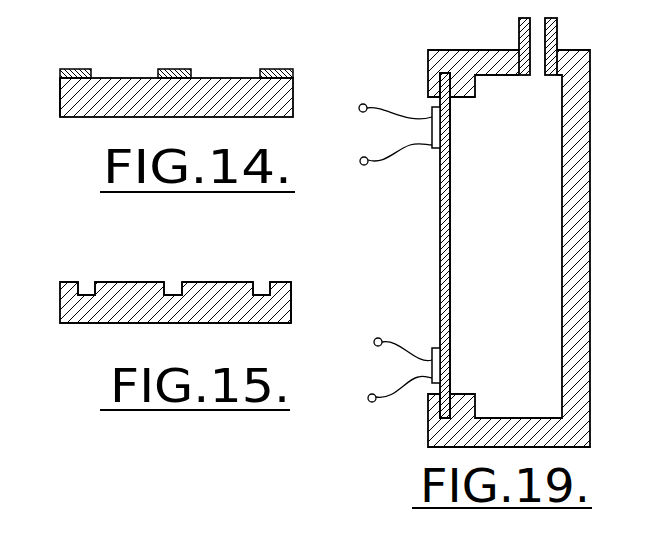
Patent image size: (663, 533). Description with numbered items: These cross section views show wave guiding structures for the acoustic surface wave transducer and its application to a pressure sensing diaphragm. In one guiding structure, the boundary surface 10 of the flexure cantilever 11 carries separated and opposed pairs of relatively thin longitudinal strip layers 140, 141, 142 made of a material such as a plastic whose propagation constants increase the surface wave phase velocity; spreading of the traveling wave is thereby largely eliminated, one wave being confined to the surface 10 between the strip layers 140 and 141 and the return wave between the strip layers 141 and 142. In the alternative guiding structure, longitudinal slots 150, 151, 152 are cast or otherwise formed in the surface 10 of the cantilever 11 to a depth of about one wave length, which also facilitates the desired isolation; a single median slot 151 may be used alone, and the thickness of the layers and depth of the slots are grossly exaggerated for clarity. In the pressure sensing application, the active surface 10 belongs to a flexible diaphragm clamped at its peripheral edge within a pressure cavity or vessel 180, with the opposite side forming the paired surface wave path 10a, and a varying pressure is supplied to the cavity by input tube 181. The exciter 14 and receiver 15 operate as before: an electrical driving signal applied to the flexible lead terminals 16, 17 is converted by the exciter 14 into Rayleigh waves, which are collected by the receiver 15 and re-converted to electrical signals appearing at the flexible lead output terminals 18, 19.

In FIG. 14, the surface layer 10 is at (120, 78).
In FIG. 15, the surface layer 10 is at (128, 282).
In FIG. 19, the surface layer 10 is at (440, 266).
In FIG. 19, the surface wave path 10a is at (450, 296).
In FIG. 14, the flexure cantilever 11 is at (60, 93).
In FIG. 15, the flexure cantilever 11 is at (291, 300).
In FIG. 19, the exciter 14 is at (440, 358).
In FIG. 19, the receiver element 15 is at (440, 116).
In FIG. 19, the flexible lead terminal 16 is at (372, 402).
In FIG. 19, the flexible lead terminal 17 is at (378, 338).
In FIG. 19, the flexible lead output terminal 18 is at (364, 165).
In FIG. 19, the flexible lead output terminal 19 is at (363, 104).
In FIG. 14, the strip layer 140 is at (78, 69).
In FIG. 14, the strip layer 141 is at (176, 69).
In FIG. 14, the strip layer 142 is at (279, 69).
In FIG. 15, the longitudinal slot 150 is at (87, 292).
In FIG. 15, the median slot 151 is at (173, 292).
In FIG. 15, the longitudinal slot 152 is at (262, 292).
In FIG. 19, the pressure cavity 180 is at (530, 234).
In FIG. 19, the input tube 181 is at (557, 34).